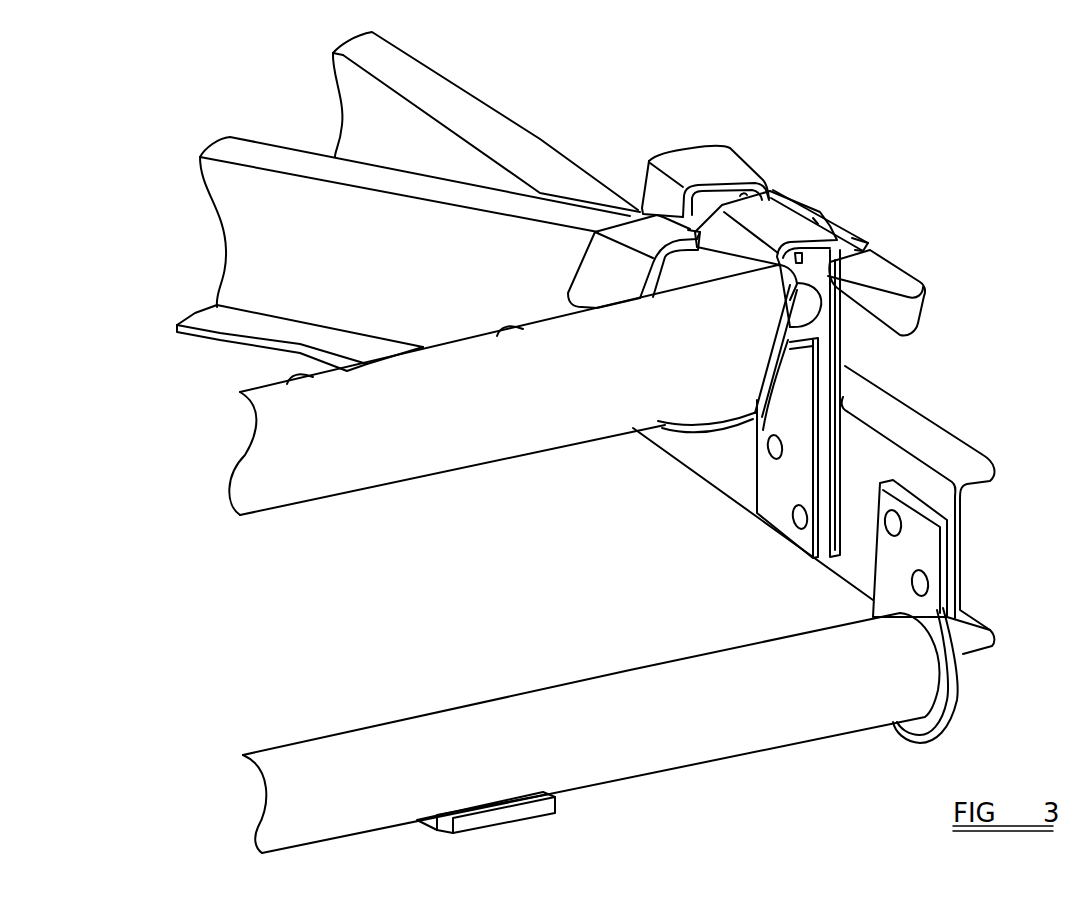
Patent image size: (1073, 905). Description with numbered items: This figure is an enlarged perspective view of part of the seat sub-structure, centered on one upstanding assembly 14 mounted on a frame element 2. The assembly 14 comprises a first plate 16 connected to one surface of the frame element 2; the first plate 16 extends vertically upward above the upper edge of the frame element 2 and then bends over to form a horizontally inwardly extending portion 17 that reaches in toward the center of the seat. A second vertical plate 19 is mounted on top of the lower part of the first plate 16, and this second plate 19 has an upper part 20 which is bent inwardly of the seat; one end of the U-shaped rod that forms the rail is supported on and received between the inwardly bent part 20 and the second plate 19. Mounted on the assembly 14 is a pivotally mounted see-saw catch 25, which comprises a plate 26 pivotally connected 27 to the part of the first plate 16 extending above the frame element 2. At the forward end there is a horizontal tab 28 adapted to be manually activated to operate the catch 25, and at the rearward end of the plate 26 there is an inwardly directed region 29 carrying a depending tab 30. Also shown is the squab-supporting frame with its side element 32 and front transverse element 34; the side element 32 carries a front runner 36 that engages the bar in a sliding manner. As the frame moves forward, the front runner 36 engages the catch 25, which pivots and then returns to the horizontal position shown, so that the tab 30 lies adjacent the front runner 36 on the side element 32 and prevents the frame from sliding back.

The frame element 2 is at (957, 457).
The upstanding assembly 14 is at (845, 343).
The first plate 16 is at (840, 405).
The horizontally inwardly extending portion 17 is at (770, 224).
The second vertical plate 19 is at (787, 492).
The inwardly bent upper part 20 is at (757, 432).
The see-saw catch 25 is at (935, 292).
The plate 26 is at (857, 243).
The pivotal connection 27 is at (852, 250).
The horizontal tab 28 is at (953, 325).
The inwardly directed region 29 is at (700, 143).
The depending tab 30 is at (648, 190).
The side element 32 is at (250, 268).
The front transverse element 34 is at (393, 440).
The front runner 36 is at (607, 265).